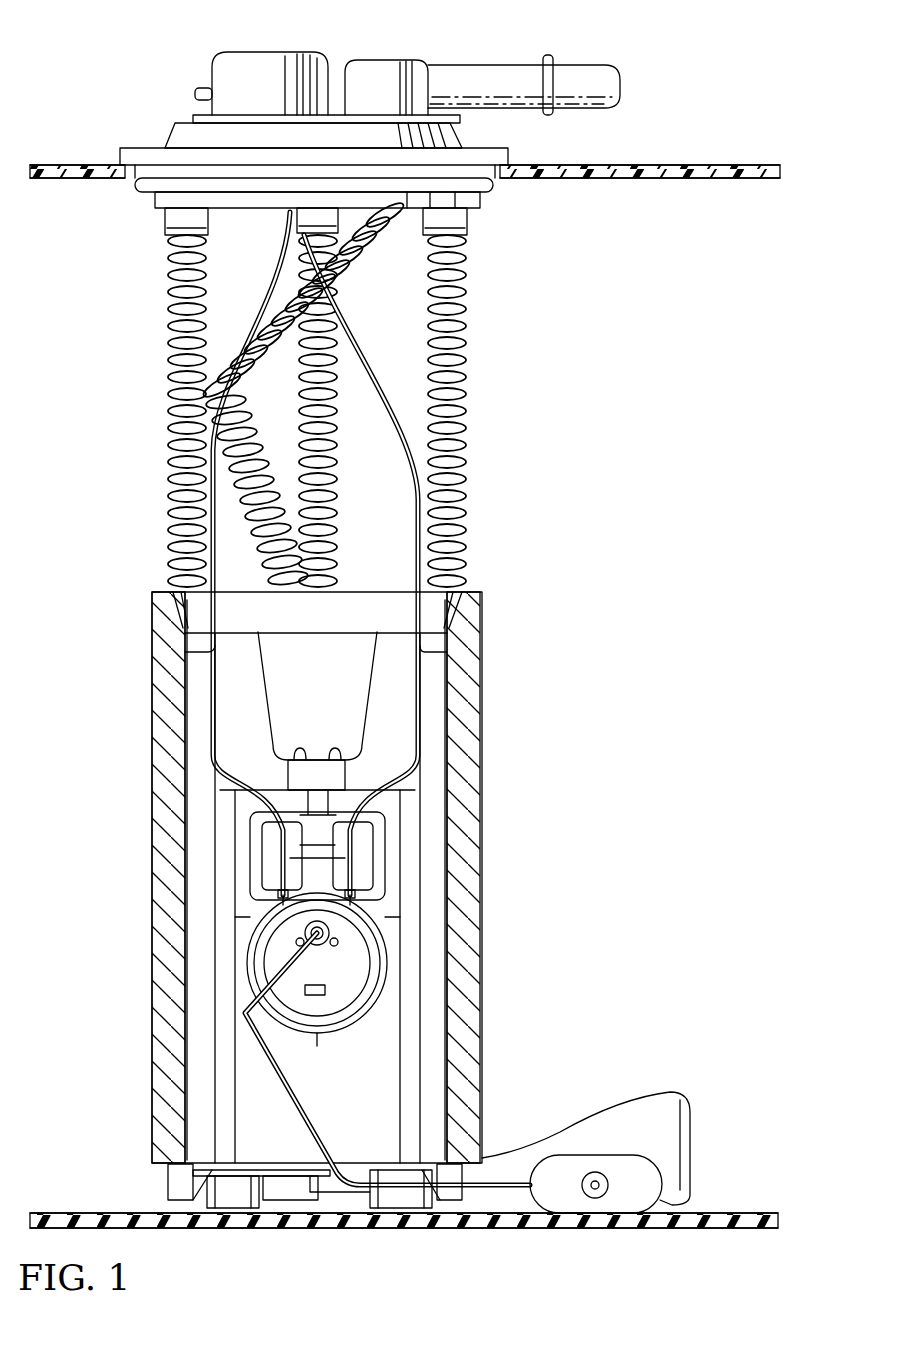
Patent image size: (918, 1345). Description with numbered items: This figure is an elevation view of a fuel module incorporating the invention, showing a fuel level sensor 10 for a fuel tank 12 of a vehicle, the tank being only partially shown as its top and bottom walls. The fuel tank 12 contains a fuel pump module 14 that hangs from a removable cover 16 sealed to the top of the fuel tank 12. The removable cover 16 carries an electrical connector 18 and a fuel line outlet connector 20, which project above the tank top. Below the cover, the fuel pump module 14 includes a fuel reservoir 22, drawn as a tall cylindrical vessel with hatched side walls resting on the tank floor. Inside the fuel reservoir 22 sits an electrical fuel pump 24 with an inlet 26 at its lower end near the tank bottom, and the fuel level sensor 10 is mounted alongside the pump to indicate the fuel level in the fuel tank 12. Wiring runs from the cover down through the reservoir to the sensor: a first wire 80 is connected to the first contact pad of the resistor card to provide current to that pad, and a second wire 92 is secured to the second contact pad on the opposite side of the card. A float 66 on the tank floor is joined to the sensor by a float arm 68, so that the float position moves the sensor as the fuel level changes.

The fuel level sensor 10 is at (385, 905).
The fuel tank 12 is at (722, 164).
The fuel pump module 14 is at (178, 125).
The removable cover 16 is at (428, 184).
The electrical connector 18 is at (257, 62).
The fuel line outlet connector 20 is at (585, 72).
The fuel reservoir 22 is at (152, 856).
The electrical fuel pump 24 is at (395, 1005).
The inlet 26 is at (283, 1190).
The float 66 is at (650, 1170).
The float arm 68 is at (497, 1185).
The first wire 80 is at (418, 665).
The second wire 92 is at (213, 665).